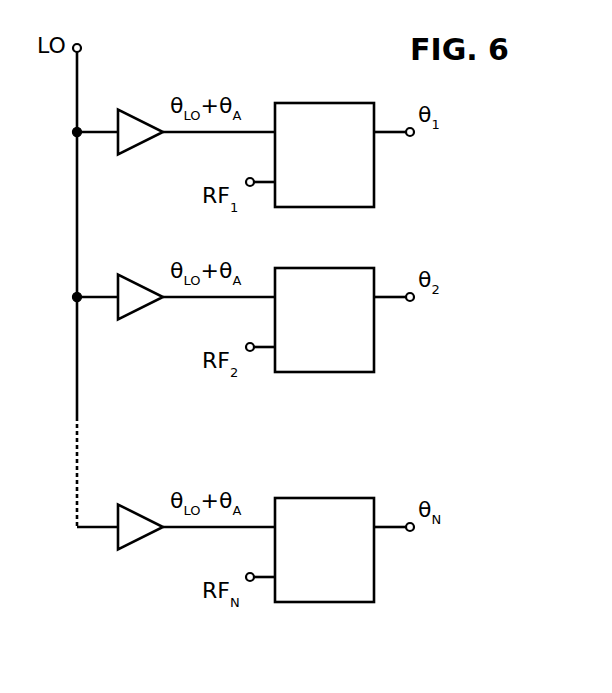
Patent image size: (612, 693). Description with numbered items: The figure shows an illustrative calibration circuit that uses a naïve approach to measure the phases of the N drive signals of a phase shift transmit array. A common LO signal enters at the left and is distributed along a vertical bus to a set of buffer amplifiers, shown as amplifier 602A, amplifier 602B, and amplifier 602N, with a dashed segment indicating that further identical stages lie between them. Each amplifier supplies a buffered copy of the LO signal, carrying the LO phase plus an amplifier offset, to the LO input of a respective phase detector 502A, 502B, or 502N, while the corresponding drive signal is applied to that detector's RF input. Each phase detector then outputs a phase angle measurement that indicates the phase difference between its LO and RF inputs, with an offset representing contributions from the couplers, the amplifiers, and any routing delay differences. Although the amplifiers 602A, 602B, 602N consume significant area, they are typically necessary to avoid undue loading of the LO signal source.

The phase detector 502A is at (325, 103).
The phase detector 502B is at (325, 268).
The phase detector 502N is at (325, 498).
The amplifier 602A is at (142, 145).
The amplifier 602B is at (142, 310).
The amplifier 602N is at (142, 540).